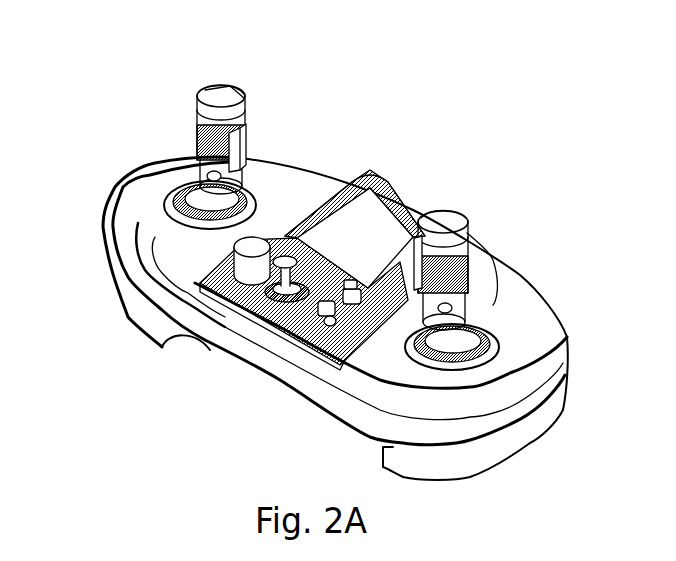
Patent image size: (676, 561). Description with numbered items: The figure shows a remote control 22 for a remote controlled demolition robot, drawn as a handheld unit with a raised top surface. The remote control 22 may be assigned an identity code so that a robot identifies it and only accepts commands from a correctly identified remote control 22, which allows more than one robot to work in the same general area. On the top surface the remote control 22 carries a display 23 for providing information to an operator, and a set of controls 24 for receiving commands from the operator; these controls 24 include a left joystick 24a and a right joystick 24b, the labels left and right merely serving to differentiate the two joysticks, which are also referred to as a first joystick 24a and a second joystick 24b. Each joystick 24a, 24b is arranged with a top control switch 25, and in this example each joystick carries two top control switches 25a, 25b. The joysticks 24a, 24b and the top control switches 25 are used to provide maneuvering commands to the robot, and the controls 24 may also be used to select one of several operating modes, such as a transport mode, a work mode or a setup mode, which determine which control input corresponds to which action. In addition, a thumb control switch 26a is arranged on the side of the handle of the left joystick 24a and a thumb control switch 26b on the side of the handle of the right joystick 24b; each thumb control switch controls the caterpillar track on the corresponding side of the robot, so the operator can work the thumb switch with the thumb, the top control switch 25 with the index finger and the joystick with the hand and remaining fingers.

The remote control 22 is at (130, 375).
The display 23 is at (367, 235).
The controls 24 is at (317, 322).
The left joystick 24a is at (190, 158).
The right joystick 24b is at (470, 292).
The top control switch 25 is at (455, 227).
The top control switch 25a is at (197, 92).
The top control switch 25b is at (238, 95).
The thumb control switch 26a is at (243, 141).
The thumb control switch 26b is at (420, 277).